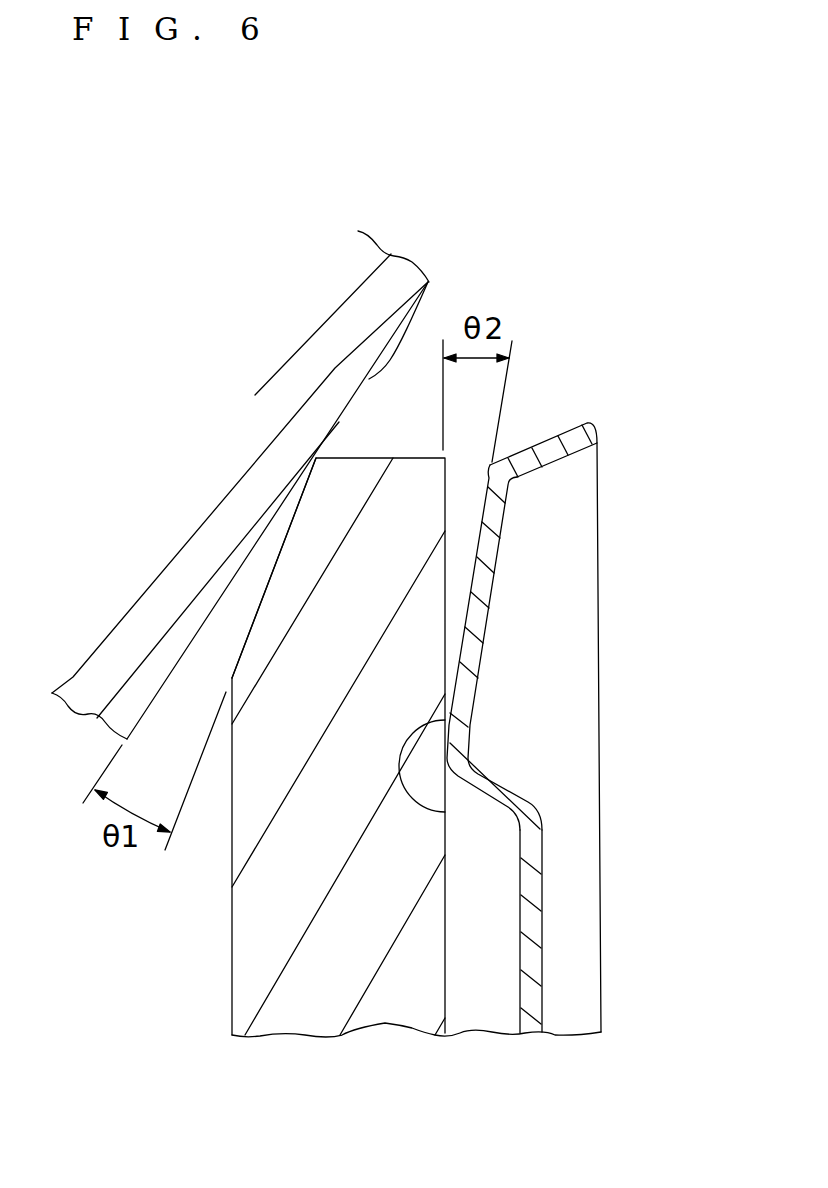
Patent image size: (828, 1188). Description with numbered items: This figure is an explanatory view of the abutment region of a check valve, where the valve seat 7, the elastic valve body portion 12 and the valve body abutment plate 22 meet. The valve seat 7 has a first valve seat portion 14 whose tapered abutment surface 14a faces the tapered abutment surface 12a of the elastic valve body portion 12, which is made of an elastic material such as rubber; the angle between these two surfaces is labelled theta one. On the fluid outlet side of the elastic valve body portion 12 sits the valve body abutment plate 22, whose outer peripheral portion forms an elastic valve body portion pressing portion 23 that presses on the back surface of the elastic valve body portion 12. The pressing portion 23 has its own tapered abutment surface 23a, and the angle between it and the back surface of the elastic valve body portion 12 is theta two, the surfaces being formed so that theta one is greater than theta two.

The valve seat 7 is at (394, 250).
The first valve seat portion 14 is at (412, 264).
The abutment surface 14a is at (400, 358).
The elastic valve body portion 12 is at (267, 953).
The abutment surface 12a is at (262, 598).
The valve body abutment plate 22 is at (532, 890).
The elastic valve body portion pressing portion 23 is at (487, 619).
The abutment surface 23a is at (483, 528).